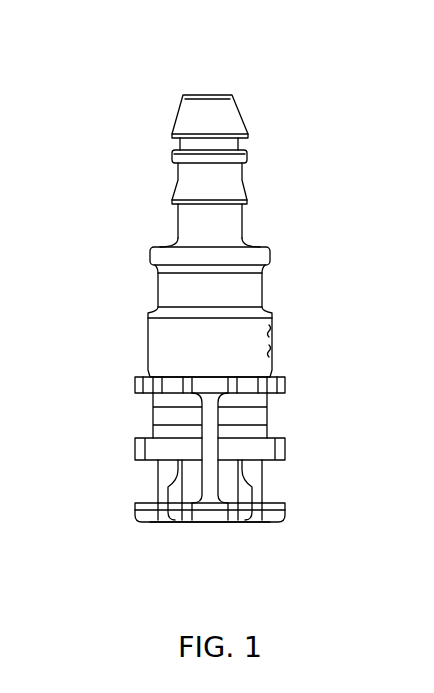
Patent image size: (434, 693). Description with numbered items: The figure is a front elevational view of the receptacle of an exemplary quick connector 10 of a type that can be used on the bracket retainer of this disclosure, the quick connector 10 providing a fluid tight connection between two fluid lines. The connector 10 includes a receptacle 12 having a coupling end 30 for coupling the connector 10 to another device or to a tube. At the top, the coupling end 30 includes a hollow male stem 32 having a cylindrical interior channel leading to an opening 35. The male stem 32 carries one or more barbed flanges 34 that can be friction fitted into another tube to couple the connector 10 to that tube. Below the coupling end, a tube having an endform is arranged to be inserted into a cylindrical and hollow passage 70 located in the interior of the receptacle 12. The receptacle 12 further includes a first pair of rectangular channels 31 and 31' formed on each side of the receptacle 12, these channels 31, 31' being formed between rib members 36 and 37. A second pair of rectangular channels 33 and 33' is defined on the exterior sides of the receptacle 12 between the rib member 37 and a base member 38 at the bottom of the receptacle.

The quick connector 10 is at (138, 56).
The receptacle 12 is at (173, 293).
The coupling end 30 is at (275, 210).
The rectangular channel 31 is at (280, 448).
The rectangular channel 31' is at (138, 448).
The hollow male stem 32 is at (188, 225).
The rectangular channel 33 is at (287, 481).
The rectangular channel 33' is at (133, 481).
The barbed flange 34 is at (237, 190).
The opening 35 is at (205, 95).
The rib member 36 is at (283, 386).
The rib member 37 is at (140, 448).
The base member 38 is at (283, 508).
The hollow passage 70 is at (206, 522).